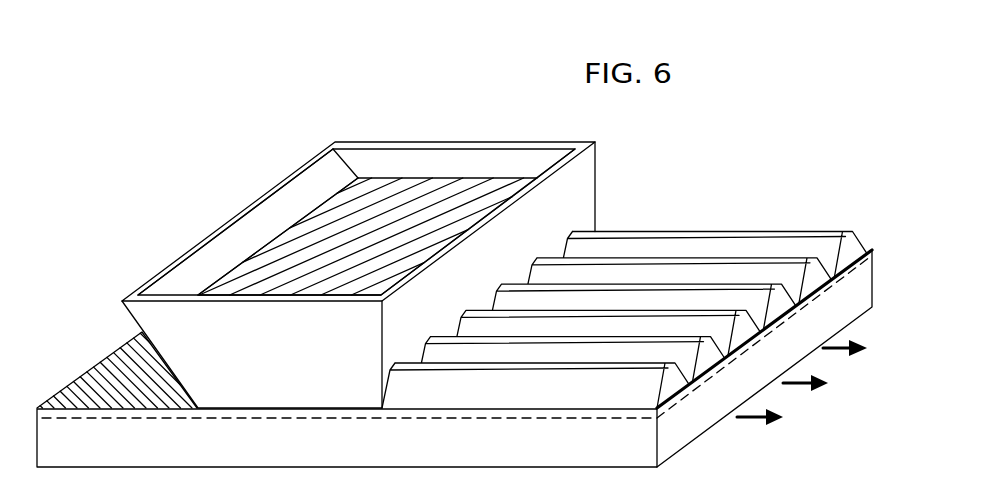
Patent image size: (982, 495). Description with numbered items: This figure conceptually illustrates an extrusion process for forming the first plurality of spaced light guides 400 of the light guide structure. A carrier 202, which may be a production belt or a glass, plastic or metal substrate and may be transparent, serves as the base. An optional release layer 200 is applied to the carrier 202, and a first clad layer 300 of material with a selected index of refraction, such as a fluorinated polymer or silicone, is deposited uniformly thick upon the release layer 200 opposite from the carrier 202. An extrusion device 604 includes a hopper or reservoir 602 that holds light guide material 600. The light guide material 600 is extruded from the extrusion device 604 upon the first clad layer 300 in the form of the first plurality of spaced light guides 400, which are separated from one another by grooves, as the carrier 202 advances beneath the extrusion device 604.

The release layer 200 is at (678, 410).
The carrier 202 is at (165, 458).
The first clad layer 300 is at (117, 378).
The first plurality of spaced light guides 400 is at (835, 213).
The light guide material 600 is at (357, 210).
The hopper or reservoir 602 is at (458, 146).
The extrusion device 604 is at (238, 210).